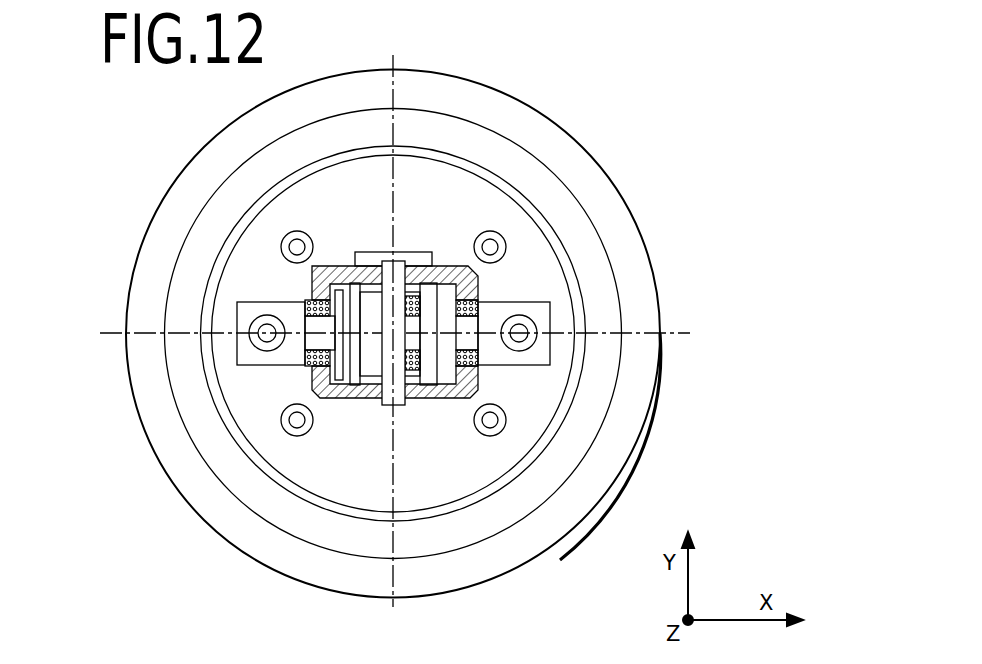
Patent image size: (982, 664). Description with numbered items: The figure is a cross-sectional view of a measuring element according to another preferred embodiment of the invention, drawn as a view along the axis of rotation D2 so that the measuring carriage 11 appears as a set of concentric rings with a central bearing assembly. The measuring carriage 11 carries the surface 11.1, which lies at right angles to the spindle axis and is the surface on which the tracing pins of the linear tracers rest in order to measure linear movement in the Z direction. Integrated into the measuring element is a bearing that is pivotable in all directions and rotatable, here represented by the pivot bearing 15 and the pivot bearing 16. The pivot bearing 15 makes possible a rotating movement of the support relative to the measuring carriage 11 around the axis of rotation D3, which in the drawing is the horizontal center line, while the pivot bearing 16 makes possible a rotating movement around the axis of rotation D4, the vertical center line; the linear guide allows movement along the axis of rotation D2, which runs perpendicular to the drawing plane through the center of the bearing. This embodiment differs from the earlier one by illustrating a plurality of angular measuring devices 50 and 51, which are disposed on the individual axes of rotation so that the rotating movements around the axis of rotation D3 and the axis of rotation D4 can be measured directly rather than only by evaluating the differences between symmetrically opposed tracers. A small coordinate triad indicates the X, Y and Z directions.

The measuring carriage 11 is at (652, 405).
The surface 11.1 is at (622, 250).
The pivot bearing 15 is at (296, 364).
The pivot bearing 16 is at (357, 378).
The angular measuring device 50 is at (414, 256).
The angular measuring device 51 is at (333, 386).
The axis of rotation D2 is at (392, 330).
The axis of rotation D3 is at (107, 332).
The axis of rotation D4 is at (396, 568).